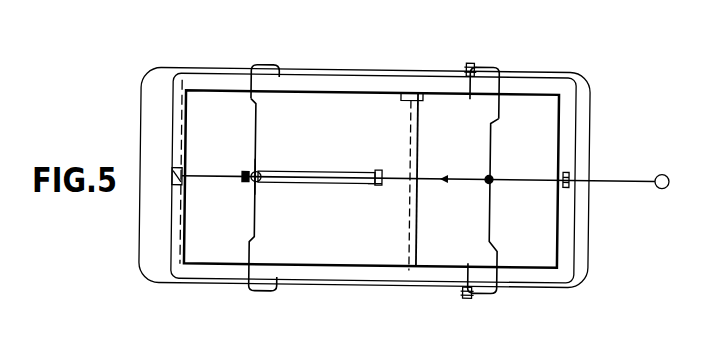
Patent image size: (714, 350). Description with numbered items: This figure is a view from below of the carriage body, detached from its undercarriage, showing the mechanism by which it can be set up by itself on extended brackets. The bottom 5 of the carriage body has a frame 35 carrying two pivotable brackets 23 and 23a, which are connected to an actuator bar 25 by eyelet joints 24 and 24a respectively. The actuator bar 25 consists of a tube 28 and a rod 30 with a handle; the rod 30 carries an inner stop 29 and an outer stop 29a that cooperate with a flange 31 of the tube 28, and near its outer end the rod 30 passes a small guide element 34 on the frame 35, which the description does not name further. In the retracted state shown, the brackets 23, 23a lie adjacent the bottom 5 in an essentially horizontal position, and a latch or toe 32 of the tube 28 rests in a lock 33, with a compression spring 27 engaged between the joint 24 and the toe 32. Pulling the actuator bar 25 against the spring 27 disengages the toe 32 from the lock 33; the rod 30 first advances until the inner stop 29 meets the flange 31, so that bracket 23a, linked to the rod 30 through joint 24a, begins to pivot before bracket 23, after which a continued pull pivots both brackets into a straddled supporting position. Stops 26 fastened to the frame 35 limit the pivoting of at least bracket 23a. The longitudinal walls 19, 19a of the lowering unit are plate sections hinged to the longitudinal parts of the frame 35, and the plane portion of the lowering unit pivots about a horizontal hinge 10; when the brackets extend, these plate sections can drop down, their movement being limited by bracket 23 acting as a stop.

The bottom 5 is at (130, 250).
The horizontal hinge 10 is at (397, 92).
The longitudinal wall 19 is at (337, 141).
The longitudinal wall 19a is at (343, 243).
The pivotable bracket 23 is at (262, 66).
The pivotable bracket 23a is at (493, 67).
The eyelet joint 24 is at (254, 166).
The eyelet joint 24a is at (488, 176).
The actuator bar 25 is at (611, 210).
The stop 26 is at (467, 63).
The compression spring 27 is at (258, 184).
The tube 28 is at (348, 172).
The inner stop 29 is at (376, 186).
The outer stop 29a is at (445, 184).
The rod 30 is at (656, 175).
The flange 31 is at (383, 171).
The latch or toe 32 is at (242, 181).
The lock 33 is at (172, 172).
The right tab 34 is at (569, 172).
The frame 35 is at (320, 74).